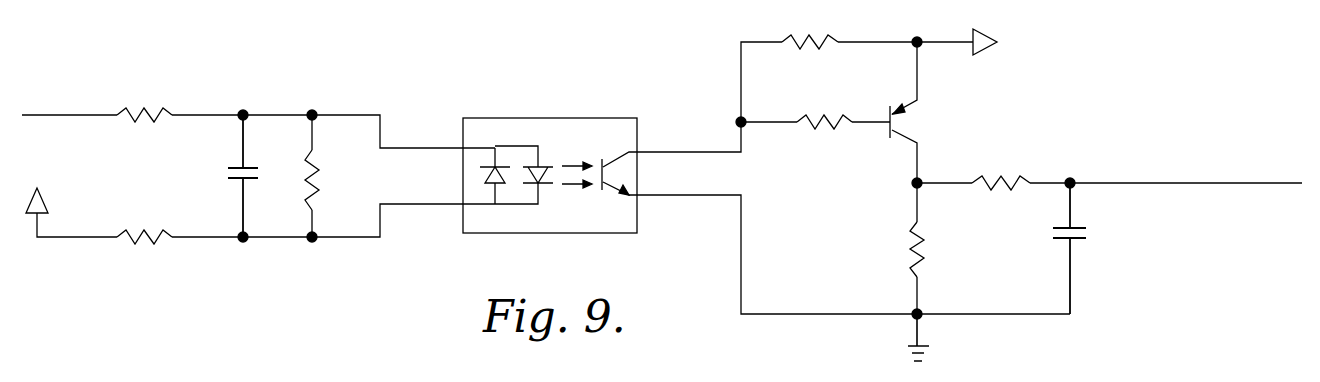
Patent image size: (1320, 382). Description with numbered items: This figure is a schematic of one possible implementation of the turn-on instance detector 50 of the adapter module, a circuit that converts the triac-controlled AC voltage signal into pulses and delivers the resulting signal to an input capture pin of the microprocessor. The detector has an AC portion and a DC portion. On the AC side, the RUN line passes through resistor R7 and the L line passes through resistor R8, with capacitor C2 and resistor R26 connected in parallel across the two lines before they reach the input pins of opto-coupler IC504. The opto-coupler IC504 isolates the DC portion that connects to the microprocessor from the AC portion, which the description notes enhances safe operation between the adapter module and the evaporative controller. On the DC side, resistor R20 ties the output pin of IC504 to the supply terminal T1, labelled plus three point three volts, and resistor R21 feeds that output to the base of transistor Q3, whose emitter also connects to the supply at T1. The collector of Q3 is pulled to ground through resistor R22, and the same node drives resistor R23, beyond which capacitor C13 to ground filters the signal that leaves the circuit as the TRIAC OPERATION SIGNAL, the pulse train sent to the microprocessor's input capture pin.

The turn-on instance detector 50 is at (1106, 311).
The resistor R7 is at (144, 104).
The resistor R8 is at (144, 225).
The capacitor C2 is at (226, 176).
The resistor R26 is at (335, 176).
The optocoupler IC504 is at (551, 163).
The resistor R20 is at (810, 28).
The resistor R21 is at (824, 107).
The power terminal T1 (+3.3V) T1 is at (1004, 31).
The transistor Q3 is at (922, 112).
The resistor R23 is at (1001, 169).
The resistor R22 is at (896, 248).
The capacitor C13 is at (1094, 248).